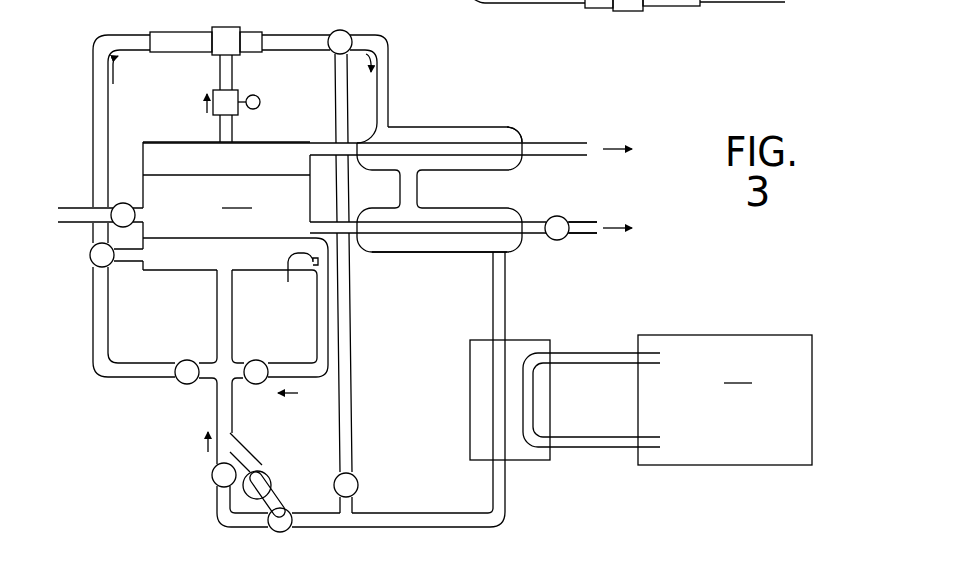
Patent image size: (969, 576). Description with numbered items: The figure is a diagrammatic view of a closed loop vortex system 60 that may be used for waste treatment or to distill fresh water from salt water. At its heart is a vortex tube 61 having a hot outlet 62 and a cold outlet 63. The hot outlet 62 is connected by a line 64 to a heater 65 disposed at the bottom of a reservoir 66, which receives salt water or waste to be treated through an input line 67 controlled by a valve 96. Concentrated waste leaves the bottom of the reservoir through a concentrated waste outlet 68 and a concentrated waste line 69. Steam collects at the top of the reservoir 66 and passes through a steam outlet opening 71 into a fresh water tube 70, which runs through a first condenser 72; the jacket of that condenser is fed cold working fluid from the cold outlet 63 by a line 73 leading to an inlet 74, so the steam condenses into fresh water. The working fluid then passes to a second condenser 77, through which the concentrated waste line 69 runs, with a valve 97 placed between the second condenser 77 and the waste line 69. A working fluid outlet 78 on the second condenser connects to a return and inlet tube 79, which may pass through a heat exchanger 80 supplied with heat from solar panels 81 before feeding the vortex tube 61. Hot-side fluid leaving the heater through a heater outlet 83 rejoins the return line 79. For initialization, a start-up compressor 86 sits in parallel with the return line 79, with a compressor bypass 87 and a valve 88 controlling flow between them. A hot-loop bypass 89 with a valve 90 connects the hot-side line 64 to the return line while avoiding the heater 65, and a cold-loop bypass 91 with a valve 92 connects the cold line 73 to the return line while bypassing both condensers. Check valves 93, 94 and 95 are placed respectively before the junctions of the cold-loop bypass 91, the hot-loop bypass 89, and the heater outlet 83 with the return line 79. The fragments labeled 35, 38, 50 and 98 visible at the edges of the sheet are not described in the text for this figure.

The coupling block 35 is at (610, 18).
The coupling block 38 is at (664, 0).
The motor 50 is at (252, 116).
The system 60 is at (166, 387).
The vortex tube 61 is at (232, 27).
The hot outlet 62 is at (194, 30).
The cold outlet 63 is at (258, 35).
The line 64 is at (92, 141).
The heater 65 is at (216, 58).
The reservoir 66 is at (235, 259).
The input line 67 is at (76, 224).
The concentrated waste outlet 68 is at (309, 231).
The concentrated waste line 69 is at (585, 236).
The fresh water tube 70 is at (458, 144).
The steam outlet opening 71 is at (304, 141).
The first condenser 72 is at (512, 132).
The line 73 is at (312, 33).
The inlet 74 is at (395, 128).
The second condenser 77 is at (444, 252).
The working fluid outlet 78 is at (500, 267).
The return and inlet tube 79 is at (234, 287).
The heat exchanger 80 is at (470, 350).
The solar panels 81 is at (667, 400).
The heater outlet 83 is at (290, 276).
The start-up compressor 86 is at (270, 468).
The compressor bypass 87 is at (214, 508).
The valve 88 is at (289, 510).
The hot-loop bypass 89 is at (93, 345).
The valve 90 is at (92, 263).
The cold-loop bypass 91 is at (334, 70).
The valve 92 is at (349, 34).
The check valve 93 is at (358, 470).
The check valve 94 is at (190, 358).
The check valve 95 is at (263, 358).
The valve 96 is at (123, 203).
The valve 97 is at (562, 216).
The check valve 98 is at (211, 477).